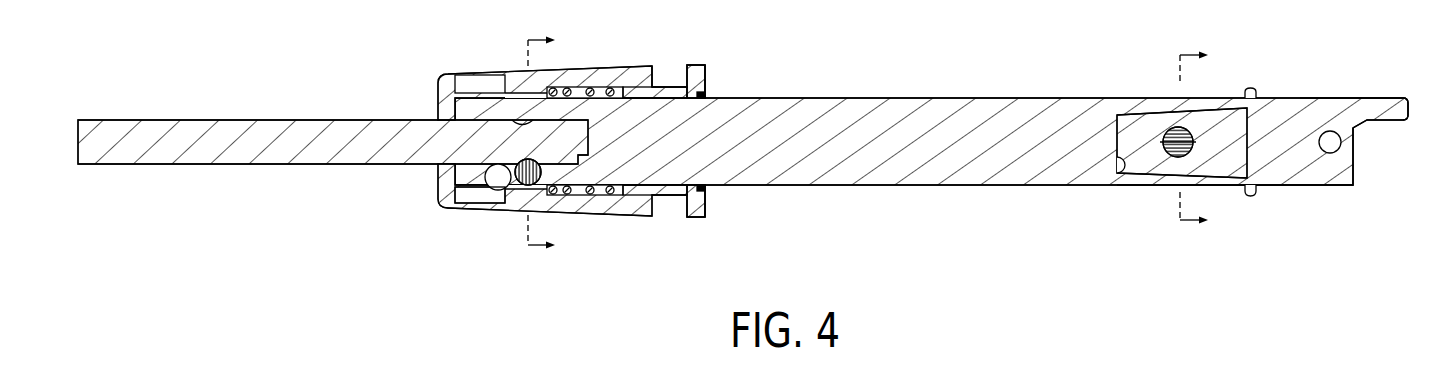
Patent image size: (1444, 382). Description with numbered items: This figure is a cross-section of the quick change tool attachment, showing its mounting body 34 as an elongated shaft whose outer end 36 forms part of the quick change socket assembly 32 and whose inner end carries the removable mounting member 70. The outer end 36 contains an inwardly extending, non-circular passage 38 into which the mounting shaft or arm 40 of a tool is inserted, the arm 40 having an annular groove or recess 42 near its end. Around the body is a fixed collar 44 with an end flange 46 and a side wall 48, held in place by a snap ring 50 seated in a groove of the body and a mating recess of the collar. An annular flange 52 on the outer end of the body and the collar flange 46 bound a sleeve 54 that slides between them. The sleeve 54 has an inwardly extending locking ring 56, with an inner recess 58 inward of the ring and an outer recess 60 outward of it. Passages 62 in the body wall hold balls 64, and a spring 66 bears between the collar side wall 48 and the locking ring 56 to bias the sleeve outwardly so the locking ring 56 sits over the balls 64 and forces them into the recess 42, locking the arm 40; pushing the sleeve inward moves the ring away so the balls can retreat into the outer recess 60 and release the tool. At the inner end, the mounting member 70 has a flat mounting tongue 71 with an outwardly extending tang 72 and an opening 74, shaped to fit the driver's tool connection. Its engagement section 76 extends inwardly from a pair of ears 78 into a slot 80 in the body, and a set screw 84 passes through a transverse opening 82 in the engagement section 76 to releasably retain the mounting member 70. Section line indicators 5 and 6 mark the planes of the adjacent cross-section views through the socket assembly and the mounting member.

The quick change socket assembly 32 is at (599, 42).
The mounting body 34 is at (888, 190).
The outer end of mounting body 36 is at (438, 177).
The passage 38 is at (443, 157).
The mounting shaft or arm 40 is at (304, 120).
The annular groove or recess 42 is at (518, 160).
The fixed collar 44 is at (706, 62).
The end flange 46 is at (691, 65).
The side wall 48 is at (667, 200).
The snap ring 50 is at (700, 185).
The annular flange 52 is at (455, 196).
The sleeve 54 is at (573, 62).
The locking ring 56 is at (522, 118).
The inner recess 58 is at (589, 196).
The outer recess 60 is at (484, 188).
The passages 62 is at (527, 185).
The balls 64 is at (519, 166).
The spring 66 is at (593, 90).
The mounting member 70 is at (1302, 92).
The mounting tongue 71 is at (1330, 98).
The tang 72 is at (1393, 97).
The opening 74 is at (1330, 142).
The engagement section 76 is at (1225, 160).
The ears 78 is at (1251, 88).
The slot 80 is at (1120, 162).
The transverse opening 82 is at (1192, 140).
The set screw 84 is at (1168, 150).
The section line 5- 5 is at (542, 144).
The section line 6- 6 is at (1194, 142).